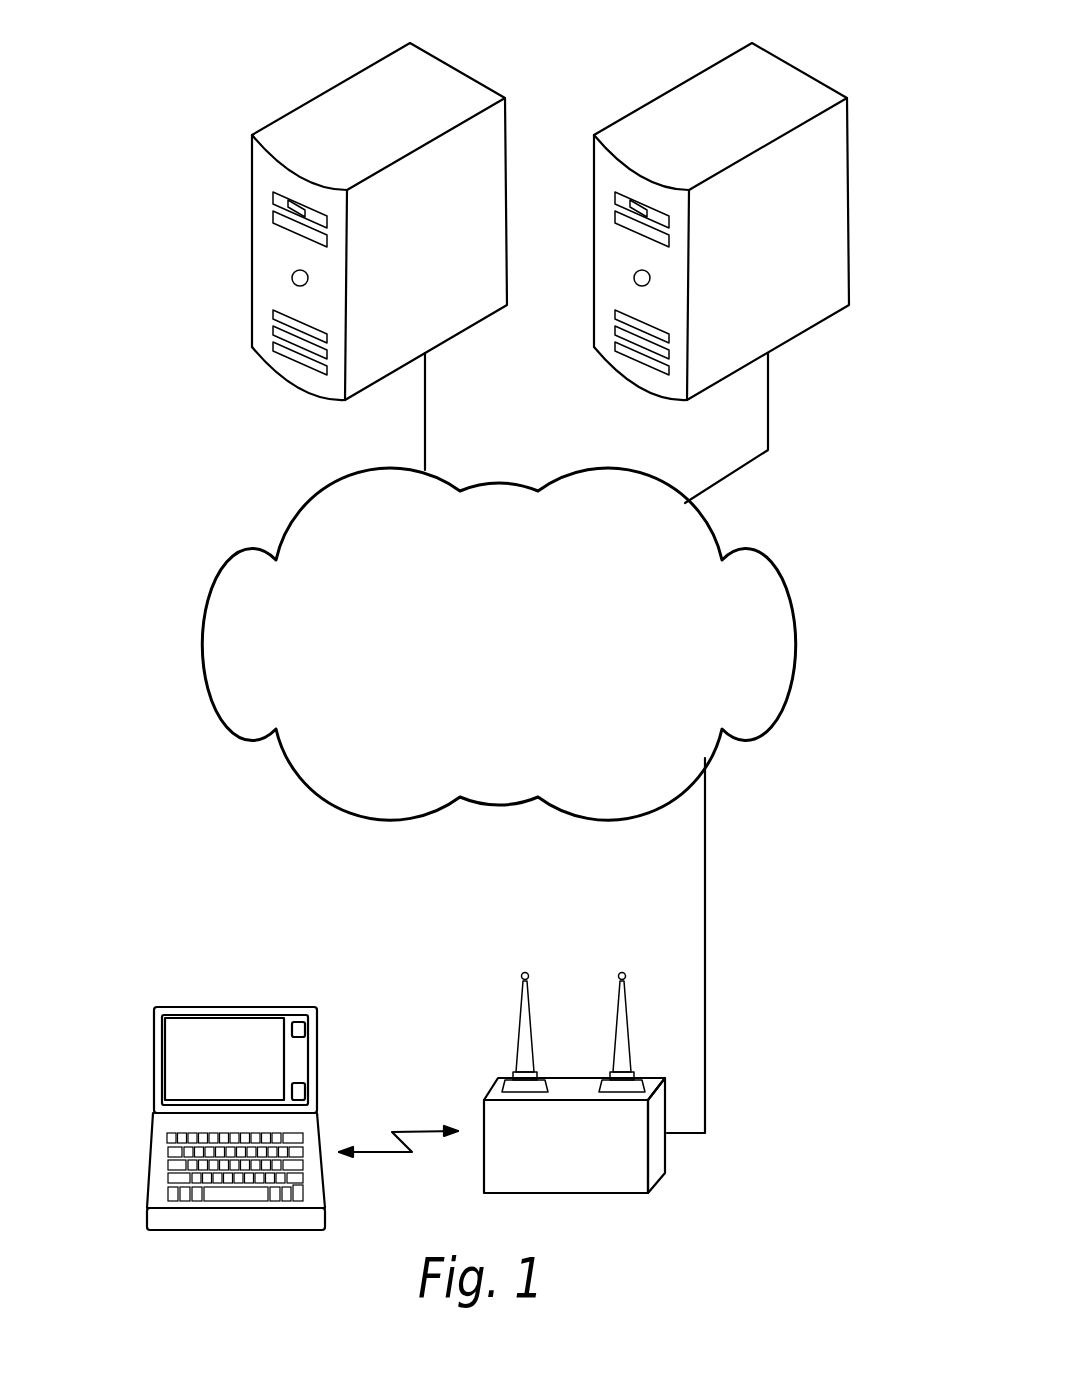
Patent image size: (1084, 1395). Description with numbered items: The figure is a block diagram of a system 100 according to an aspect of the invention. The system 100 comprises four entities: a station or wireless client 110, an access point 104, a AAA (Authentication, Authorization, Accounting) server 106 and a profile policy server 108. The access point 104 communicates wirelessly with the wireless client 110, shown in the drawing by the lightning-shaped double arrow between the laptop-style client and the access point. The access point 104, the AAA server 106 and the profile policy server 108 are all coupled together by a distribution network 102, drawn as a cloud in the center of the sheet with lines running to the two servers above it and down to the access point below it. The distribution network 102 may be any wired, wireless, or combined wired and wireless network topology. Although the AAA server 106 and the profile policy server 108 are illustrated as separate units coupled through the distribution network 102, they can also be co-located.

The system 100 is at (188, 94).
The distribution network 102 is at (205, 645).
The access point 104 is at (484, 1116).
The AAA server 106 is at (252, 249).
The profile policy server 108 is at (847, 210).
The wireless client 110 is at (154, 1077).